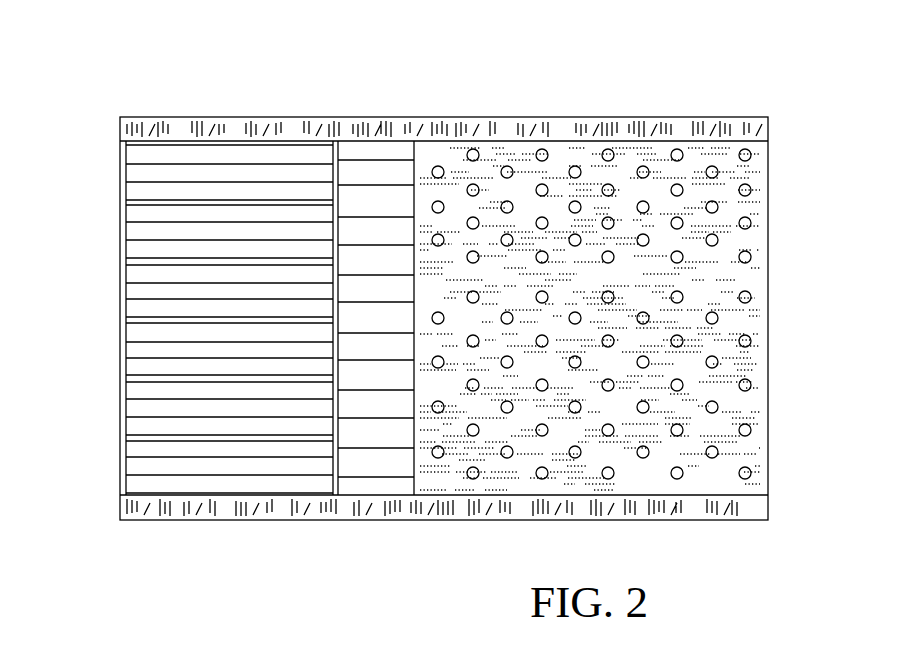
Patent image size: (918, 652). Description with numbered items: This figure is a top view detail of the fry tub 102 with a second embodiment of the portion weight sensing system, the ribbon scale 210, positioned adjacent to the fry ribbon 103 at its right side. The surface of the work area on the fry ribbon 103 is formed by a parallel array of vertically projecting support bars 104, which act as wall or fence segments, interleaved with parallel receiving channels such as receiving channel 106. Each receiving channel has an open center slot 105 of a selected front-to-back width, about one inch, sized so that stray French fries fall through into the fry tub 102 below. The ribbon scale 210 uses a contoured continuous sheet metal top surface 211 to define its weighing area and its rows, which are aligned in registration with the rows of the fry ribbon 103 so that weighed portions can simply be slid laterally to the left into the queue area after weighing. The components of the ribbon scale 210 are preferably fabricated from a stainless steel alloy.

The fry tub 102 is at (758, 238).
The fry ribbon 103 is at (217, 128).
The support bars 104 is at (122, 116).
The open center slot 105 is at (125, 240).
The receiving channel 106 is at (121, 168).
The ribbon scale 210 is at (383, 106).
The contoured continuous sheet metal top surface 211 is at (377, 442).